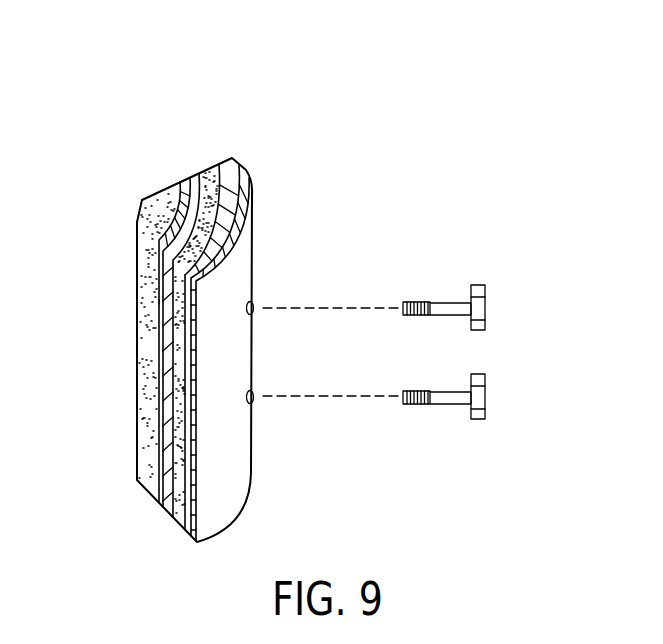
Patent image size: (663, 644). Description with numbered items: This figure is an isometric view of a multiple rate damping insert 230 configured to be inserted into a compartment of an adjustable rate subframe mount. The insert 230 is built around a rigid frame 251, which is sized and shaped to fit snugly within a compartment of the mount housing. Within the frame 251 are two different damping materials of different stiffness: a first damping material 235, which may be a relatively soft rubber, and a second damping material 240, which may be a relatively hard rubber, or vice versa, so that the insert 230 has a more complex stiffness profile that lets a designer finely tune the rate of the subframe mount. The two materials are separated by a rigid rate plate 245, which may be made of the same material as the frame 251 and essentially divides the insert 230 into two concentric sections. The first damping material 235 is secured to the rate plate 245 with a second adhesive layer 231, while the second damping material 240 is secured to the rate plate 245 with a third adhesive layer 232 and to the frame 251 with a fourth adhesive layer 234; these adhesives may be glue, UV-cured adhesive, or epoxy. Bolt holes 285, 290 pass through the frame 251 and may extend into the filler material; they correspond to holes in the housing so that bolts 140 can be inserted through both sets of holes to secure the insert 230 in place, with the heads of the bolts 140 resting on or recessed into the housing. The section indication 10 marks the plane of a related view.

The insert 230 is at (268, 82).
The third adhesive layer 232 is at (198, 174).
The rate plate 245 is at (189, 180).
The first damping material 235 is at (160, 200).
The second damping material 240 is at (242, 192).
The frame 251 is at (253, 203).
The second adhesive layer 231 is at (158, 301).
The fourth adhesive layer 234 is at (188, 462).
The bolt hole 285 is at (254, 307).
The bolt hole 290 is at (255, 400).
The bolt 140 is at (486, 305).
The section line 10 is at (125, 328).